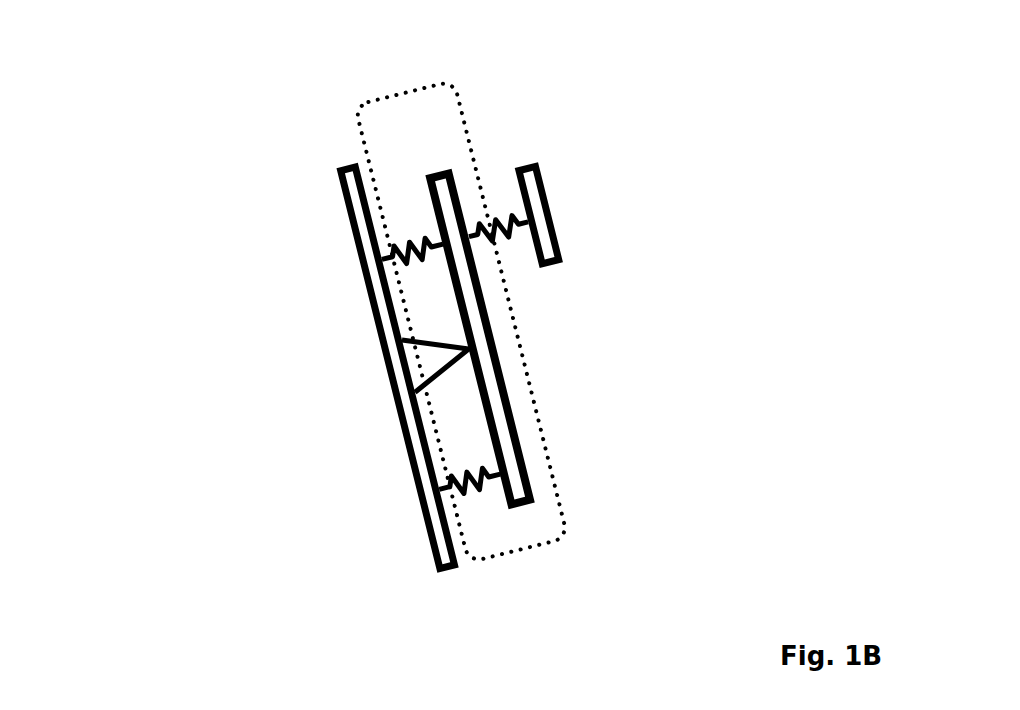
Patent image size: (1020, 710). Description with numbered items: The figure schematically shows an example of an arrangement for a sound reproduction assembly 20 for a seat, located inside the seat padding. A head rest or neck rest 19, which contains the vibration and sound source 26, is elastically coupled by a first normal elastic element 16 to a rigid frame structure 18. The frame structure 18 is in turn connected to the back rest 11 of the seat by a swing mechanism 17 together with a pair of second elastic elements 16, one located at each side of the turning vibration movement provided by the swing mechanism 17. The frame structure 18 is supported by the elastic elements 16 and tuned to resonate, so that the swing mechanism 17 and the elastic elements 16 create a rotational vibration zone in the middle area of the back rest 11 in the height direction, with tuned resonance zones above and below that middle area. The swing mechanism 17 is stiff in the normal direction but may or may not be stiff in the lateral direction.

The back rest 11 is at (343, 222).
The elastic element 16 is at (360, 137).
The swing mechanism 17 is at (392, 373).
The frame structure 18 is at (519, 505).
The neck rest 19 is at (624, 157).
The vibration and sound source 26 is at (533, 212).
The sound reproduction assembly 20 is at (235, 252).